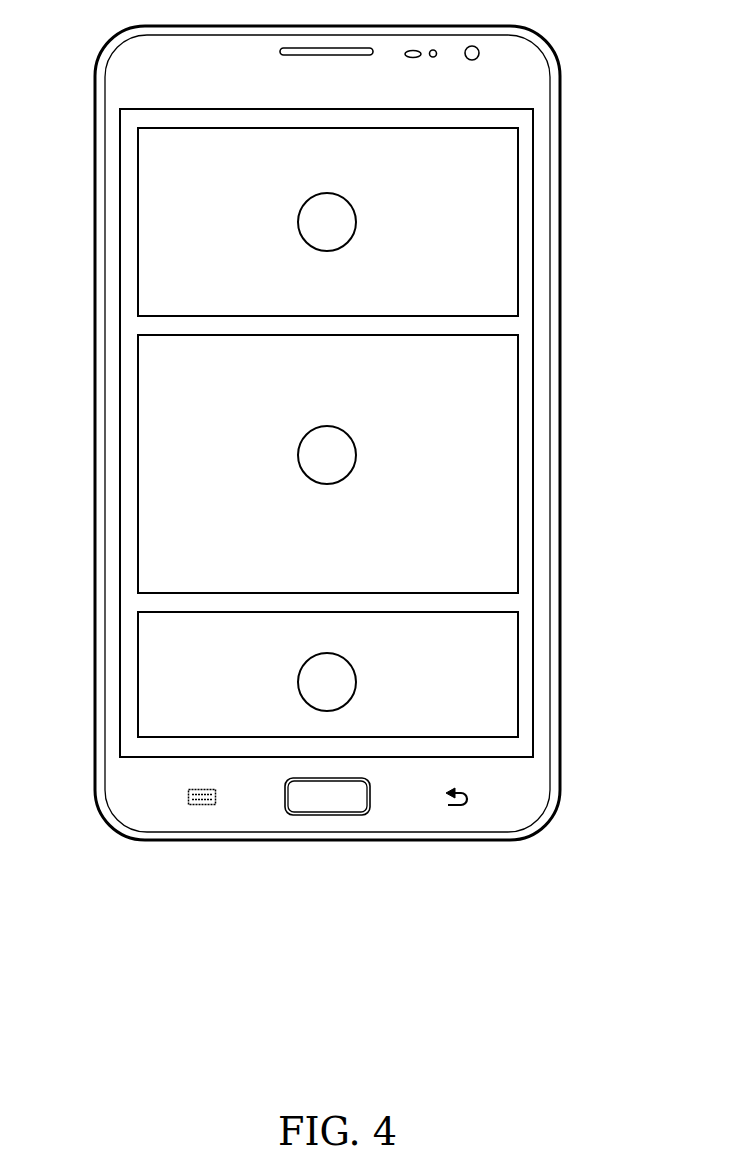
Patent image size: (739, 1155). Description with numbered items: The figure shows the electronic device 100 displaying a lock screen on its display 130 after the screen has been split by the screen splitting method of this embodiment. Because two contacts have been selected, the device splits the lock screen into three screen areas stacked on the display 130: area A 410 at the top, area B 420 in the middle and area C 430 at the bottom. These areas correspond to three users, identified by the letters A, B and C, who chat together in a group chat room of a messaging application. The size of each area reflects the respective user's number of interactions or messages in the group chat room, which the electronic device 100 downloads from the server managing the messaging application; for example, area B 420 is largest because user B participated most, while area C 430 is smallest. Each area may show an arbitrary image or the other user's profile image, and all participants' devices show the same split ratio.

The electronic device 100 is at (560, 183).
The display 130 is at (533, 290).
The area A 410 is at (138, 222).
The area B 420 is at (138, 462).
The area C 430 is at (138, 681).